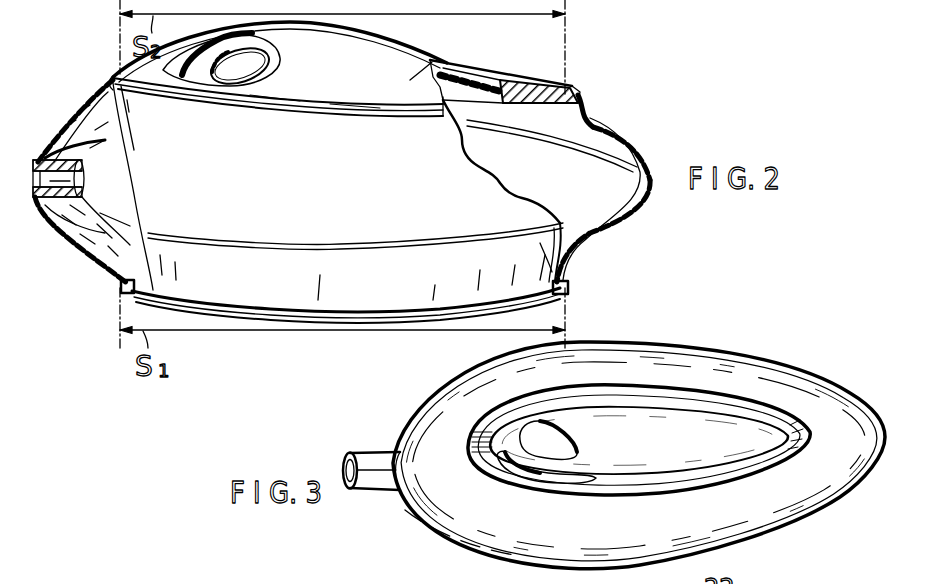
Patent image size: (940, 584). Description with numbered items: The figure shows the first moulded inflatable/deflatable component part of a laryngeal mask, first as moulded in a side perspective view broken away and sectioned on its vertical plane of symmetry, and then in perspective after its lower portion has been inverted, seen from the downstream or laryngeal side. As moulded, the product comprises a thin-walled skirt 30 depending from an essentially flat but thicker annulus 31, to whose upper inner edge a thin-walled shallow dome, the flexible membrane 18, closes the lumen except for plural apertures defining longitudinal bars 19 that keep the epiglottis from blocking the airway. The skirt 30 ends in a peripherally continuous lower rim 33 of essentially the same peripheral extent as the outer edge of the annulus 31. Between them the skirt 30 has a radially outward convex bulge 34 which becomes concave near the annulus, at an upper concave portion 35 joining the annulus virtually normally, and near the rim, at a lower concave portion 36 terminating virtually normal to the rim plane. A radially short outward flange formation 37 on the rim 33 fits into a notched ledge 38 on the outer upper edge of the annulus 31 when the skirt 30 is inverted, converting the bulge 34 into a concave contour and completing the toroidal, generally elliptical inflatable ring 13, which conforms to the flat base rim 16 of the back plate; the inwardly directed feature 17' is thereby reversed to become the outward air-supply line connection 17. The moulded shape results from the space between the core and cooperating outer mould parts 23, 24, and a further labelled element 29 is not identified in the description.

In FIG. 3, the peripheral inflatable/deflatable ring 13 is at (710, 362).
In FIG. 2, the flat base rim 16 is at (342, 174).
In FIG. 3, the air-supply line connection 17 is at (371, 449).
In FIG. 2, the inwardly directed feature 17' is at (111, 176).
In FIG. 2, the flexible membrane 18 is at (432, 62).
In FIG. 3, the flexible membrane 18 is at (680, 475).
In FIG. 2, the longitudinal bars 19 is at (200, 85).
In FIG. 3, the longitudinal bars 19 is at (557, 466).
In FIG. 3, the outer mould part 23 is at (255, 573).
In FIG. 3, the outer mould part 24 is at (777, 579).
In FIG. 3, the rim 29 is at (355, 573).
In FIG. 2, the thin-walled skirt 30 is at (316, 313).
In FIG. 2, the annulus 31 is at (538, 103).
In FIG. 3, the annulus 31 is at (763, 417).
In FIG. 2, the lower rim 33 is at (278, 316).
In FIG. 2, the convex bulge 34 is at (652, 183).
In FIG. 2, the upper concave portion 35 is at (584, 106).
In FIG. 2, the lower concave portion 36 is at (567, 265).
In FIG. 2, the outward flange formation 37 is at (120, 287).
In FIG. 2, the ledge 38 is at (576, 87).